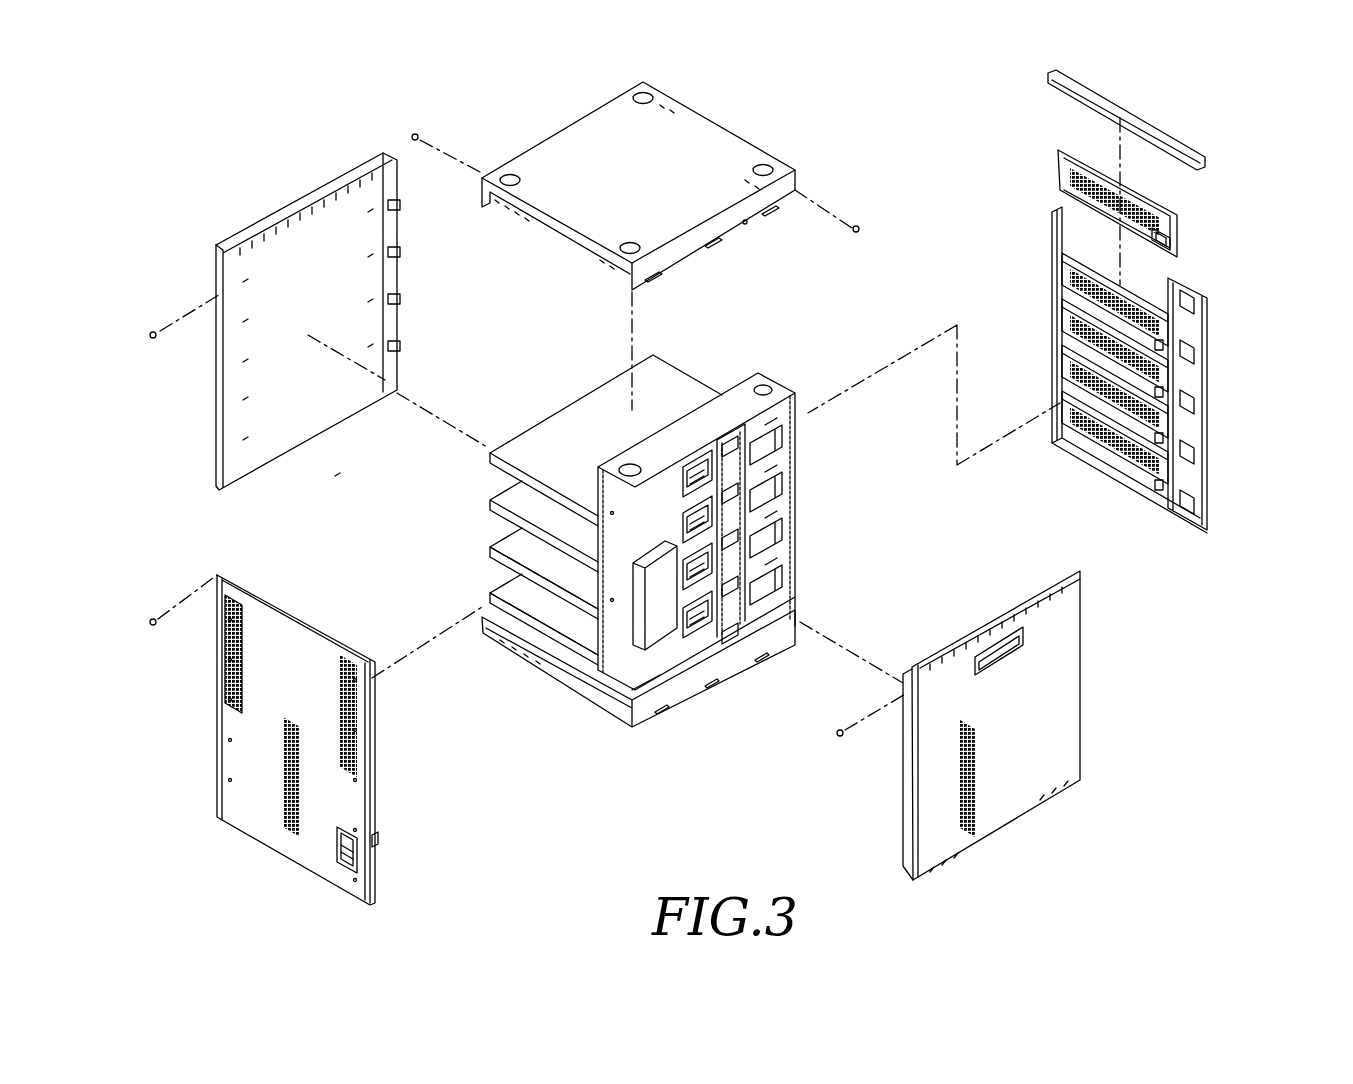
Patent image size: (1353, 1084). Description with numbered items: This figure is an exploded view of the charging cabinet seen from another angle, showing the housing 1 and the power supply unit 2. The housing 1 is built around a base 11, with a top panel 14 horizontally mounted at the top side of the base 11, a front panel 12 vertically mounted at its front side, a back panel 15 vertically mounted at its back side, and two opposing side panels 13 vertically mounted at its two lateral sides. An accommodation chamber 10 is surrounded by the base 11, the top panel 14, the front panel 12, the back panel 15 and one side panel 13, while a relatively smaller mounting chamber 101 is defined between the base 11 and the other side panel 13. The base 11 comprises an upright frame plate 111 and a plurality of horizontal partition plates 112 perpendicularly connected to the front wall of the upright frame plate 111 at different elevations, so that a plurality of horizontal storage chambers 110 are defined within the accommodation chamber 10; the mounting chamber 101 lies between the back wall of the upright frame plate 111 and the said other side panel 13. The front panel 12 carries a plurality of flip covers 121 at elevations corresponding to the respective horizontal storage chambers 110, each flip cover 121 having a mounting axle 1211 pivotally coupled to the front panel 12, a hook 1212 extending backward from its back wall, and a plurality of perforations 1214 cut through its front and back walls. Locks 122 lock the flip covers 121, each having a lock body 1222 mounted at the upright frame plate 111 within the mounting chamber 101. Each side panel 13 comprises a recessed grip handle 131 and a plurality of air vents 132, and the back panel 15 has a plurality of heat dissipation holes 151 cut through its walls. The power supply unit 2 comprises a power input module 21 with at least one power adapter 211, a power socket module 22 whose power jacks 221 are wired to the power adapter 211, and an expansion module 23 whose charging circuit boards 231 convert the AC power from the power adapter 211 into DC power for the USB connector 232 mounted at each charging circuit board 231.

The housing 1 is at (578, 795).
The accommodation chamber 10 is at (630, 508).
The base 11 is at (590, 673).
The mounting chamber 101 is at (643, 658).
The horizontal storage chamber 110 is at (535, 592).
The upright frame plate 111 is at (655, 658).
The horizontal partition plate 112 is at (563, 618).
The front panel 12 is at (1147, 301).
The flip cover 121 is at (1062, 172).
The mounting axle 1211 is at (1062, 149).
The hook 1212 is at (1162, 240).
The perforation 1214 is at (1150, 210).
The lock 122 is at (1210, 312).
The lock body 1222 is at (783, 553).
The side panel 13 is at (300, 231).
The recessed grip handle 131 is at (982, 653).
The air vent 132 is at (968, 720).
The top panel 14 is at (705, 137).
The back panel 15 is at (392, 725).
The heat dissipation hole 151 is at (235, 595).
The power supply unit 2 is at (380, 827).
The power input module 21 is at (468, 850).
The power adapter 211 is at (375, 840).
The power socket module 22 is at (702, 300).
The power jack 221 is at (692, 462).
The expansion module 23 is at (748, 330).
The charging circuit board 231 is at (725, 440).
The USB connector 232 is at (740, 440).